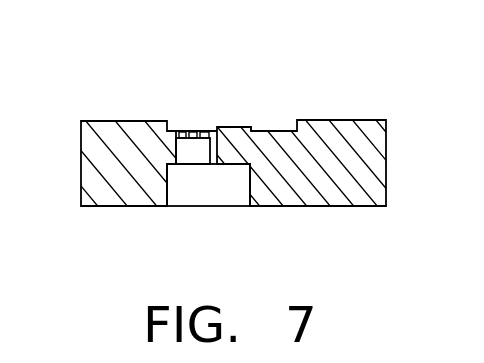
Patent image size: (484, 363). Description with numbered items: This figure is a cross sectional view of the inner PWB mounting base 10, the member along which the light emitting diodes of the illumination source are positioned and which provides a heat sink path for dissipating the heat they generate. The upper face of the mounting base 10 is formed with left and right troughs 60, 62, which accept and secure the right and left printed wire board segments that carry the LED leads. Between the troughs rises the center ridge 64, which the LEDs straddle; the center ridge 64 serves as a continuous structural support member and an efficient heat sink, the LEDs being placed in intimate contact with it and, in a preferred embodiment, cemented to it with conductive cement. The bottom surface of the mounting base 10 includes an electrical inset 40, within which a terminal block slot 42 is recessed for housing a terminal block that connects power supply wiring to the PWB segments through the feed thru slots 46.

The inner PWB mounting base 10 is at (81, 150).
The electrical inset 40 is at (227, 193).
The terminal block slot 42 is at (192, 170).
The feed thru slots 46 is at (188, 133).
The left trough 60 is at (278, 130).
The right trough 62 is at (202, 131).
The center ridge 64 is at (240, 127).